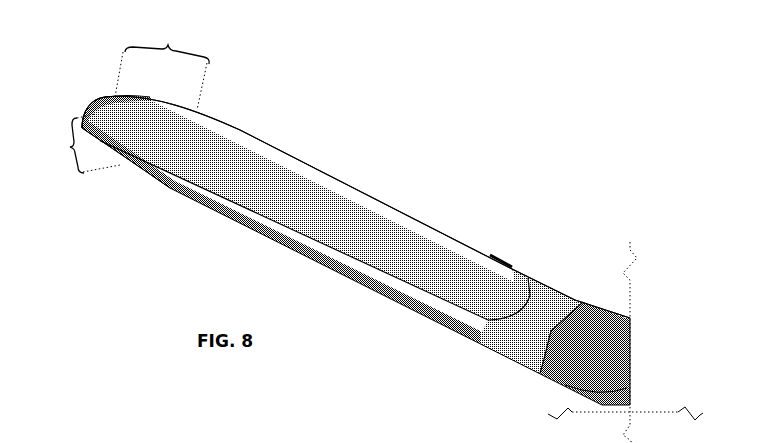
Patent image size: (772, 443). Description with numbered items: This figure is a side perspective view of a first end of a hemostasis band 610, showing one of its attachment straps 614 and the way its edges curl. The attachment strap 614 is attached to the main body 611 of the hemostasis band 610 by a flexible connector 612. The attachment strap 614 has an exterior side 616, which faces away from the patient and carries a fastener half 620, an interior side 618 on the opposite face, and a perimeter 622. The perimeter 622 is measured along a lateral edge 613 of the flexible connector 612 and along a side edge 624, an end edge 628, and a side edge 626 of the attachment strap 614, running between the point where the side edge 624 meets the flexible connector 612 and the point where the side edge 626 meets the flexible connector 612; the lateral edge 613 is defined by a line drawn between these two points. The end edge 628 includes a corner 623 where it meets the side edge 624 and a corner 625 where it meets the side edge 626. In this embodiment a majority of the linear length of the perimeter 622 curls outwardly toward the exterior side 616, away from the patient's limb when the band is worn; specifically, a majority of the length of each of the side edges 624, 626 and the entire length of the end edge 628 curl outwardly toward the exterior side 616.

The hemostasis band 610 is at (507, 141).
The main body 611 is at (577, 368).
The flexible connector 612 is at (548, 343).
The lateral edge 613 is at (544, 328).
The attachment strap 614 is at (247, 134).
The exterior side 616 is at (549, 301).
The interior side 618 is at (328, 271).
The fastener half 620 is at (356, 207).
The perimeter 622 is at (253, 230).
The corner 623 is at (104, 142).
The side edge 624 is at (156, 183).
The corner 625 is at (162, 69).
The side edge 626 is at (317, 160).
The end edge 628 is at (101, 99).